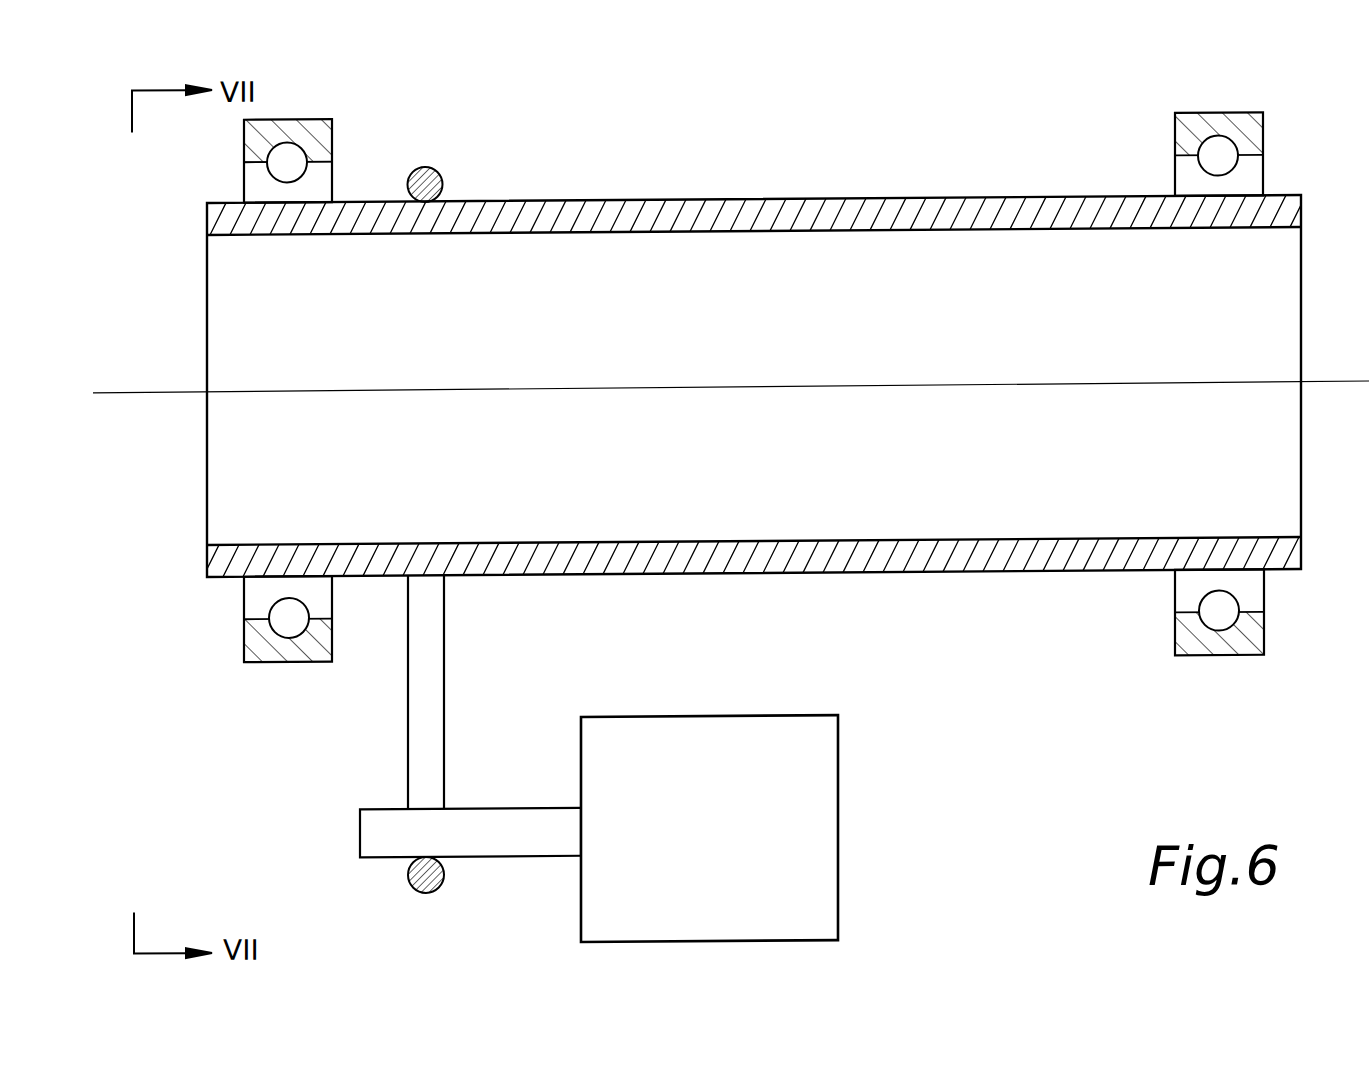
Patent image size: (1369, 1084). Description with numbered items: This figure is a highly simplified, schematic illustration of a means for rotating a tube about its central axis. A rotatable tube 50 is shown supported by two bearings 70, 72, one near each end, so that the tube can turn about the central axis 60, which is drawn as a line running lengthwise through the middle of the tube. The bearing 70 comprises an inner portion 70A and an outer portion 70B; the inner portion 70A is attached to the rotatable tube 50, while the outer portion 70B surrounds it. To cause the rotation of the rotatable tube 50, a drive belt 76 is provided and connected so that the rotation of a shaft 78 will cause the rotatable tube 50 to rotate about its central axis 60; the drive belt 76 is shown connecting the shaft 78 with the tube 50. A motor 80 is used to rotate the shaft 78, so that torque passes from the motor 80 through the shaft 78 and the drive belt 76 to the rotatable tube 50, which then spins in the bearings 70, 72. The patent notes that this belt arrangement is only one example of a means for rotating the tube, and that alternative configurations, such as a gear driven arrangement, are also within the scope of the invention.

The rotatable tube 50 is at (765, 211).
The central axis 60 is at (182, 393).
The bearing 70 is at (278, 166).
The inner portion 70A is at (254, 182).
The outer portion 70B is at (243, 128).
The bearing 72 is at (1232, 134).
The drive belt 76 is at (430, 172).
The shaft 78 is at (379, 828).
The motor 80 is at (807, 841).